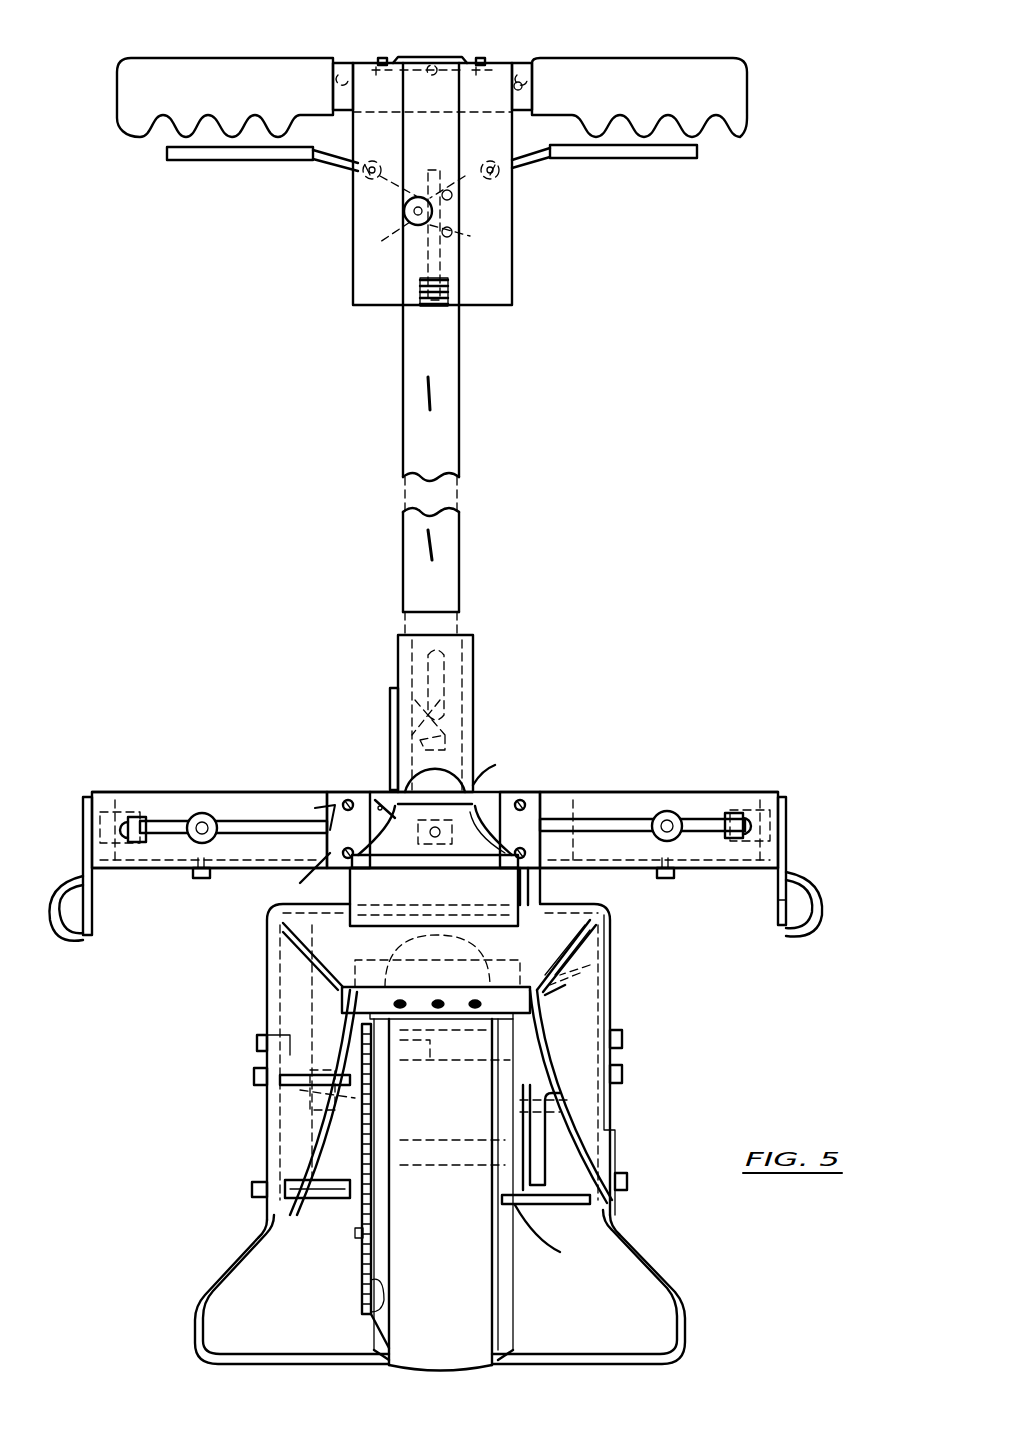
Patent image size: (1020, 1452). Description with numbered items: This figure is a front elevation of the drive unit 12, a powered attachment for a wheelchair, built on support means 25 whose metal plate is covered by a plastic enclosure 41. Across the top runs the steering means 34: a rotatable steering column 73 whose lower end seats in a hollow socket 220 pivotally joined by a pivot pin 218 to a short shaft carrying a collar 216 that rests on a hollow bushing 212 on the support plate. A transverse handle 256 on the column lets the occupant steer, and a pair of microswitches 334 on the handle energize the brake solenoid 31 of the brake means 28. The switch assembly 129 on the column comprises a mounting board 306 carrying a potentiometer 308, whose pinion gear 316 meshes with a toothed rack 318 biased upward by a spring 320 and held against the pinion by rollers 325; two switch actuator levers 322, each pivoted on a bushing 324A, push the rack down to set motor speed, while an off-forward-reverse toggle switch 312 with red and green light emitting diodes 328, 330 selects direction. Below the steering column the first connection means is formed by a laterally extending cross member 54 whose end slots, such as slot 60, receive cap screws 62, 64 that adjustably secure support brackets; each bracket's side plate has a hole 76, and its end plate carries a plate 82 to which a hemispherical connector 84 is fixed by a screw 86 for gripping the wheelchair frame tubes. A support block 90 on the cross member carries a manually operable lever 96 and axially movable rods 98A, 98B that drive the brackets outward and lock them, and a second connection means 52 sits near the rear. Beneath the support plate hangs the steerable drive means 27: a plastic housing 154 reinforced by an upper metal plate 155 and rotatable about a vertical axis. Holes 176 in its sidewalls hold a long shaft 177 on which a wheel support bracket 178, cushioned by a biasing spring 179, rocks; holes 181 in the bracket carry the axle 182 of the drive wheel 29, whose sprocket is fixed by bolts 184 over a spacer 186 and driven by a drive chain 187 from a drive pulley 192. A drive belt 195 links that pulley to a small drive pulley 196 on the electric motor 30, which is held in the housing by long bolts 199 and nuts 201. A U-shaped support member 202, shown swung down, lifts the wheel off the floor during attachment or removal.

The drive unit 12 is at (782, 449).
The support means 25 is at (500, 790).
The steerable drive means 27 is at (552, 1296).
The brake means 28 is at (612, 968).
The drive wheel 29 is at (460, 1367).
The electric motor 30 is at (580, 1204).
The brake solenoid 31 is at (610, 980).
The steering means 34 is at (537, 678).
The plastic enclosure 41 is at (350, 893).
The second connection means 52 is at (375, 712).
The cross member 54 is at (758, 795).
The elongated slot 60 is at (155, 818).
The cap screw 62 is at (193, 880).
The cap screw 64 is at (206, 813).
The steering column 73 is at (459, 478).
The hole 76 is at (132, 790).
The plate 82 is at (92, 920).
The connector 84 is at (55, 935).
The screw 86 is at (775, 903).
The support block 90 is at (530, 795).
The manually operable lever 96 is at (445, 667).
The axially movable rod 98A is at (300, 772).
The axially movable rod 98B is at (596, 795).
The switch assembly 129 is at (560, 198).
The housing 154 is at (612, 945).
The upper metal plate 155 is at (570, 905).
The holes 176 is at (245, 1020).
The long shaft 177 is at (622, 1075).
The wheel support bracket 178 is at (540, 985).
The biasing spring 179 is at (455, 1000).
The holes 181 is at (580, 1120).
The axle 182 is at (551, 1236).
The bolts 184 is at (355, 1240).
The spacer 186 is at (375, 1318).
The drive chain 187 is at (362, 1305).
The drive pulley 192 is at (290, 938).
The drive belt 195 is at (283, 928).
The small drive pulley 196 is at (280, 1094).
The long bolts 199 is at (300, 1060).
The nuts 201 is at (254, 1076).
The U-shaped support member 202 is at (685, 1285).
The hollow bushing 212 is at (300, 883).
The collar 216 is at (370, 782).
The pivot pin 218 is at (480, 782).
The hollow socket 220 is at (473, 640).
The handle 256 is at (522, 62).
The mounting board 306 is at (512, 268).
The potentiometer 308 is at (404, 208).
The toggle switch 312 is at (466, 58).
The pinion gear 316 is at (440, 214).
The toothed rack 318 is at (426, 245).
The spring 320 is at (420, 293).
The switch actuator levers 322 is at (205, 160).
The bushing 324A is at (360, 178).
The rollers 325 is at (455, 232).
The light emitting diode 328 is at (482, 57).
The light emitting diode 330 is at (383, 57).
The microswitches 334 is at (343, 63).